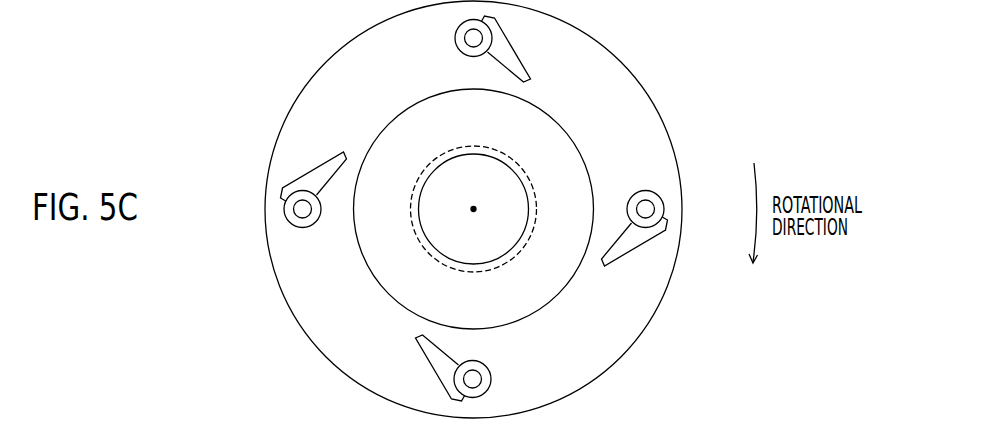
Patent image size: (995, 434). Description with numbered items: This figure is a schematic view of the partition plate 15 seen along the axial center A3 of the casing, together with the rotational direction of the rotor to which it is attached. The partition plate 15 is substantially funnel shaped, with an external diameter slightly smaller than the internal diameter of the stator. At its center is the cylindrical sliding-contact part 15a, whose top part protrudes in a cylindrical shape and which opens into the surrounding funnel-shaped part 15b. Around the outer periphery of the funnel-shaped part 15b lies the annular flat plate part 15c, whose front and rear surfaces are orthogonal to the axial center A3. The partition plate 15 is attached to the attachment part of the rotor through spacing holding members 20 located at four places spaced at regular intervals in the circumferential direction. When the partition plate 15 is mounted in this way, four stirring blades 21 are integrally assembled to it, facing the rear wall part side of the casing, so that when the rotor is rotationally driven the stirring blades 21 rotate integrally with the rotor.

The partition plate 15 is at (492, 209).
The cylindrical sliding-contact part 15a is at (445, 263).
The funnel-shaped part 15b is at (375, 254).
The annular flat plate part 15c is at (617, 331).
The spacing holding member 20 is at (456, 41).
The stirring blade 21 is at (518, 53).
The axial center A3 is at (479, 207).